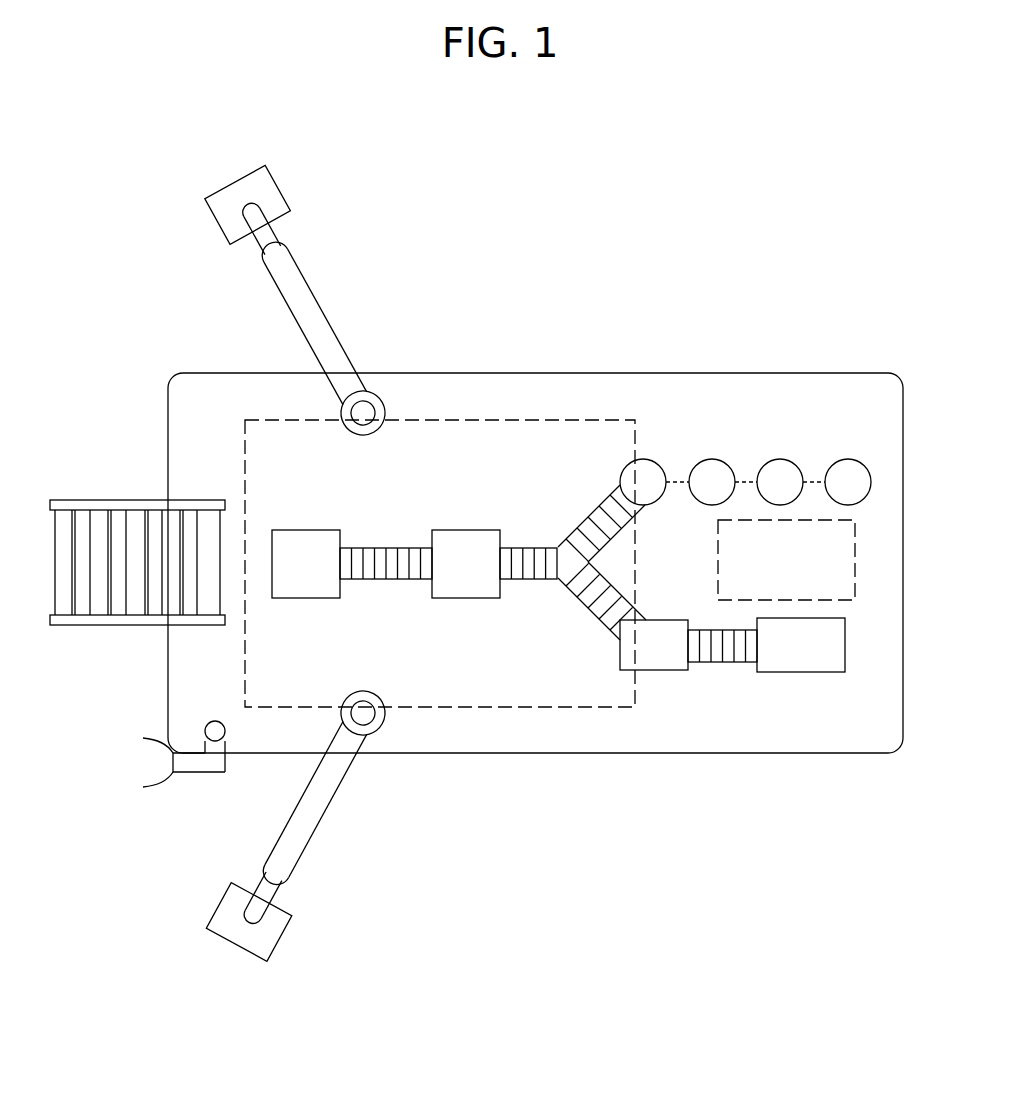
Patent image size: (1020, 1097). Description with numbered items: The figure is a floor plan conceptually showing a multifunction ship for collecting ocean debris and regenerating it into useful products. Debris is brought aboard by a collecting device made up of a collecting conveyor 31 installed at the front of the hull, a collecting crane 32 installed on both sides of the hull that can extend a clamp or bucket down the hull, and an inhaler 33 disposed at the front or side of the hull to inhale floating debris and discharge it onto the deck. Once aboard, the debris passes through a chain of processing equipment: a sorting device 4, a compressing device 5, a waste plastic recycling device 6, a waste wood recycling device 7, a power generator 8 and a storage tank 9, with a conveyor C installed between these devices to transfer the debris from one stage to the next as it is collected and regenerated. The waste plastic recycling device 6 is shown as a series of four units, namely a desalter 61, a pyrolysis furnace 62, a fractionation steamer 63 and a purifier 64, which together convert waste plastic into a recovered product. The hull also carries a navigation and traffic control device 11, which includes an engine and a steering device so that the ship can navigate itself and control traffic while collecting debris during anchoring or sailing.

The sorting device 4 is at (302, 598).
The compressing device 5 is at (465, 598).
The waste plastic recycling device 6 is at (763, 378).
The desalter 61 is at (643, 458).
The pyrolysis furnace 62 is at (712, 458).
The fractionation steamer 63 is at (780, 458).
The purifier 64 is at (865, 410).
The waste wood recycling device 7 is at (655, 670).
The power generator 8 is at (800, 672).
The storage tank 9 is at (505, 707).
The navigation and traffic control device 11 is at (857, 600).
The collecting conveyor 31 is at (118, 626).
The collecting crane 32 is at (333, 305).
The inhaler 33 is at (197, 772).
The conveyor C is at (385, 585).